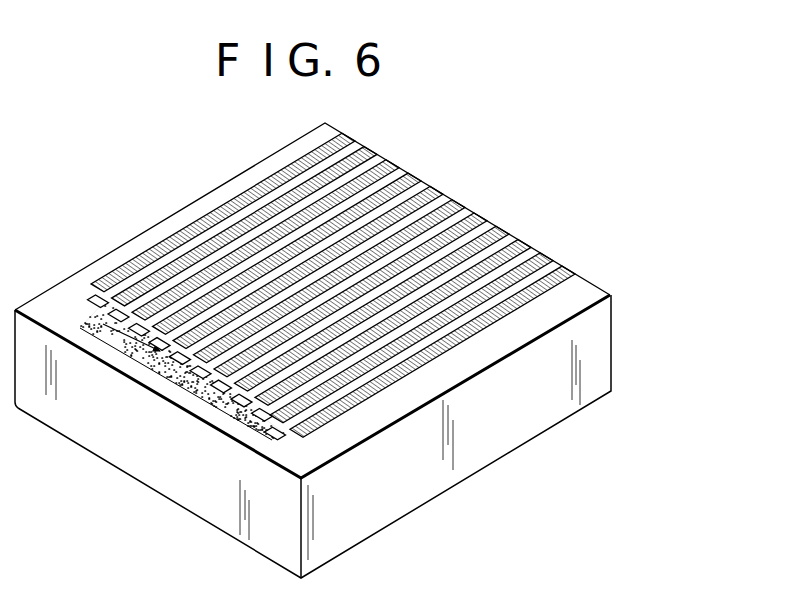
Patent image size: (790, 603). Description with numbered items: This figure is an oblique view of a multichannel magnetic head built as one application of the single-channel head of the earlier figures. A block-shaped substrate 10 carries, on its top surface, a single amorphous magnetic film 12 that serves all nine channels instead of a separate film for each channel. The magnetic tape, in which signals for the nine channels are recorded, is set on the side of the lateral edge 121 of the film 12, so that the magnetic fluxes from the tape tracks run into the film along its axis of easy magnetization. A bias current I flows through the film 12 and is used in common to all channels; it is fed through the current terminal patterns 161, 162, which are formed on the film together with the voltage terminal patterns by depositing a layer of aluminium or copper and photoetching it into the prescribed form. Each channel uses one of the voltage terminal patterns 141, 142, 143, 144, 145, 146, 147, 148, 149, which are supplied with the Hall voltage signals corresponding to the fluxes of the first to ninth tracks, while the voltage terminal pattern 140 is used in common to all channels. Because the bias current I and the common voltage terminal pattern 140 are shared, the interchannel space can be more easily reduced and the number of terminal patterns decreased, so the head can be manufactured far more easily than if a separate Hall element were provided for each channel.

The substrate 10 is at (482, 437).
The amorphous magnetic film 12 is at (230, 400).
The lateral edge of the film 121 is at (110, 353).
The bias current I is at (182, 367).
The voltage terminal pattern 140 is at (586, 272).
The voltage terminal pattern 141 is at (546, 256).
The voltage terminal pattern 142 is at (524, 243).
The voltage terminal pattern 143 is at (502, 230).
The voltage terminal pattern 144 is at (480, 217).
The voltage terminal pattern 145 is at (458, 204).
The voltage terminal pattern 146 is at (436, 190).
The voltage terminal pattern 147 is at (414, 177).
The voltage terminal pattern 148 is at (392, 164).
The voltage terminal pattern 149 is at (380, 148).
The current terminal pattern 161 is at (348, 136).
The current terminal pattern 162 is at (569, 270).